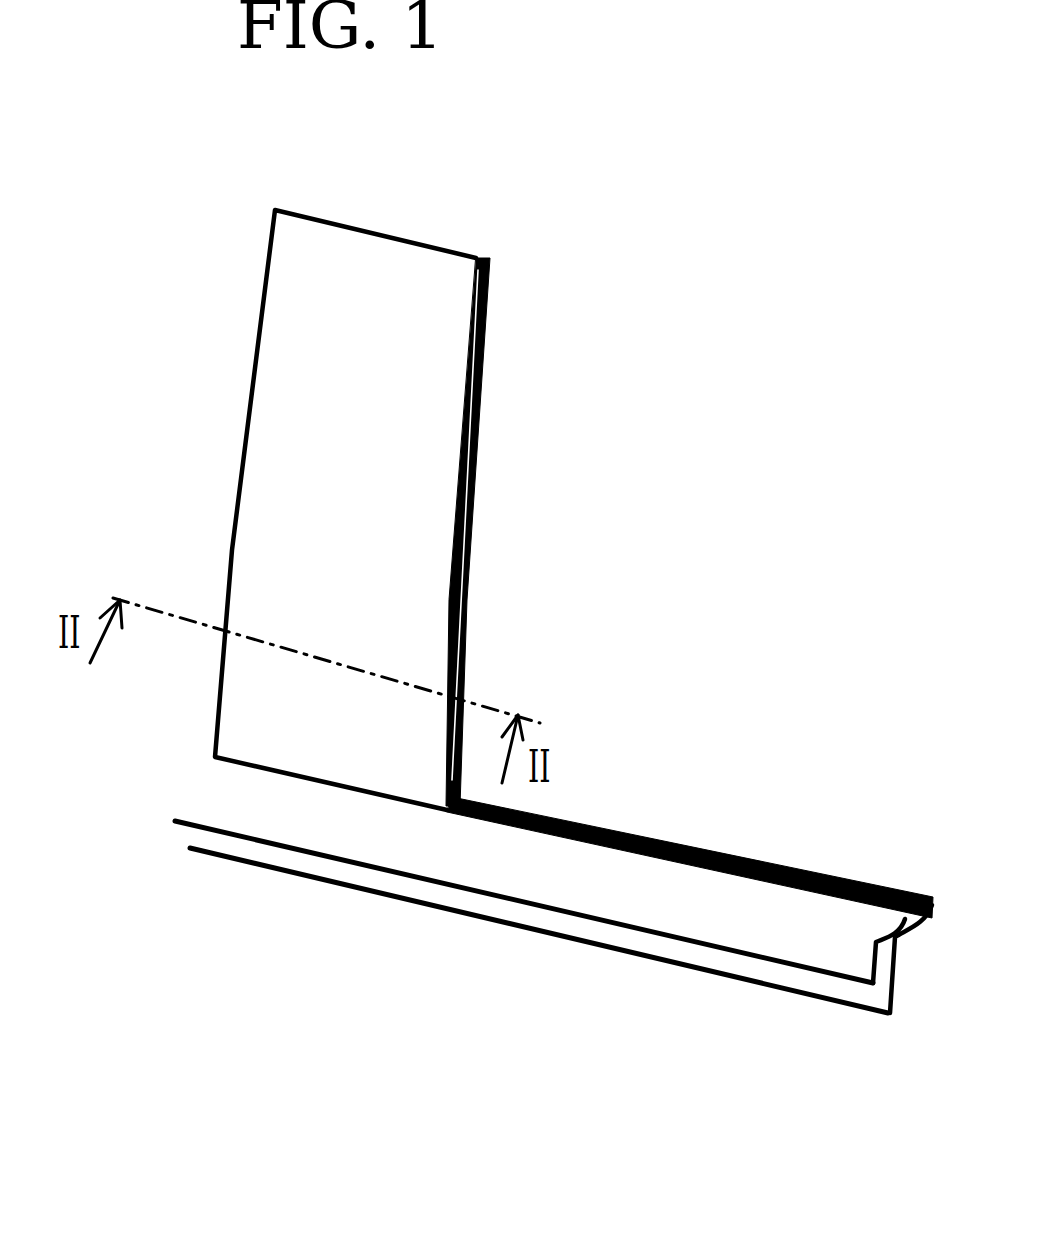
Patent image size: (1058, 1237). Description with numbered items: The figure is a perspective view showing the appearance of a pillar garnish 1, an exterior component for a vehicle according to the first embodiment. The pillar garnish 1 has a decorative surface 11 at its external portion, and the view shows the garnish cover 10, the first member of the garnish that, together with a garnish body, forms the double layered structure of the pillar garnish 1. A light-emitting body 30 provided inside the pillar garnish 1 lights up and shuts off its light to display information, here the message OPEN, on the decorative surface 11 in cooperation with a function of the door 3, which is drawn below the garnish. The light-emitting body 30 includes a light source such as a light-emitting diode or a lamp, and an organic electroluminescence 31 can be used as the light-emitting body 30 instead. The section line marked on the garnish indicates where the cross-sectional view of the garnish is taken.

The pillar garnish 1 is at (502, 588).
The garnish cover 10 is at (282, 527).
The decorative surface 11 is at (282, 382).
The door 3 is at (302, 920).
The light-emitting body 30 is at (382, 645).
The organic electroluminescence 31 is at (526, 632).